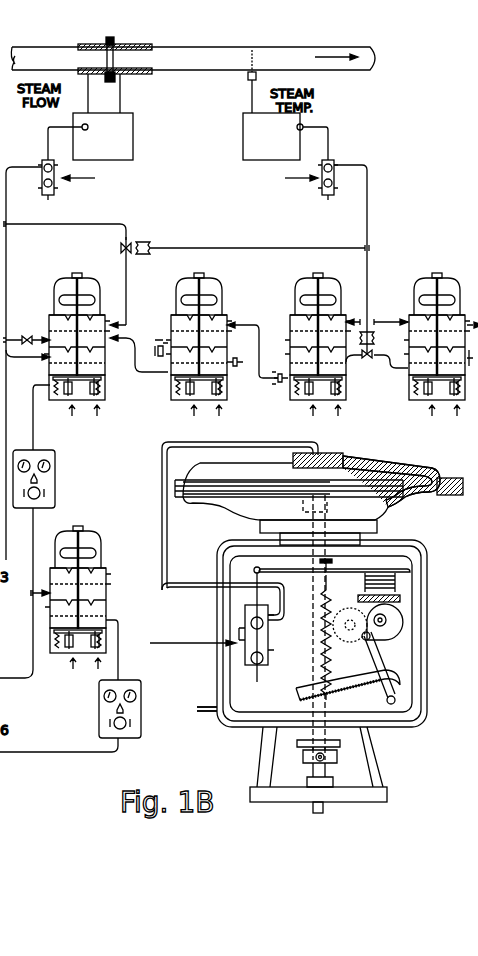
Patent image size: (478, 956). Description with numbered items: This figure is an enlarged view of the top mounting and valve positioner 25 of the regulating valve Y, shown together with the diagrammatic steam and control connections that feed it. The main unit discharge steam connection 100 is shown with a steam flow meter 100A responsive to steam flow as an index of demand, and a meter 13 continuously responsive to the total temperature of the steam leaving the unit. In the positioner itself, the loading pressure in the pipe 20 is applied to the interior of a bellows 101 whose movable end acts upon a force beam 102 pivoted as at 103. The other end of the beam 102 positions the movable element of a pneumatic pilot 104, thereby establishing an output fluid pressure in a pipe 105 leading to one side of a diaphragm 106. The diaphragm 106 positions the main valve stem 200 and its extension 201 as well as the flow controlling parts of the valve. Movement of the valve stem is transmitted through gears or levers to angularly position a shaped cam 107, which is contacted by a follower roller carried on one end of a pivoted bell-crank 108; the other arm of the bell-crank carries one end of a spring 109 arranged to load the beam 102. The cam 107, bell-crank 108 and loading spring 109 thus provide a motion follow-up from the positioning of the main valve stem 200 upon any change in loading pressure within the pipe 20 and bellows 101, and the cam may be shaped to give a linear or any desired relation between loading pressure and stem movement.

The main unit discharge steam connection 100 is at (355, 70).
The steam flow meter 100A is at (122, 155).
The meter 13 is at (281, 155).
The pipe 105 is at (160, 480).
The diaphragm 106 is at (420, 490).
The extension 201 is at (328, 505).
The force beam 102 is at (375, 557).
The pivot 103 is at (410, 560).
The bellows 101 is at (398, 585).
The shaped cam 107 is at (403, 640).
The spring 109 is at (323, 600).
The valve positioner 25 is at (213, 612).
The pneumatic pilot 104 is at (250, 672).
The pipe 20 is at (210, 714).
The pivoted bell-crank 108 is at (372, 703).
The main valve stem 200 is at (323, 810).